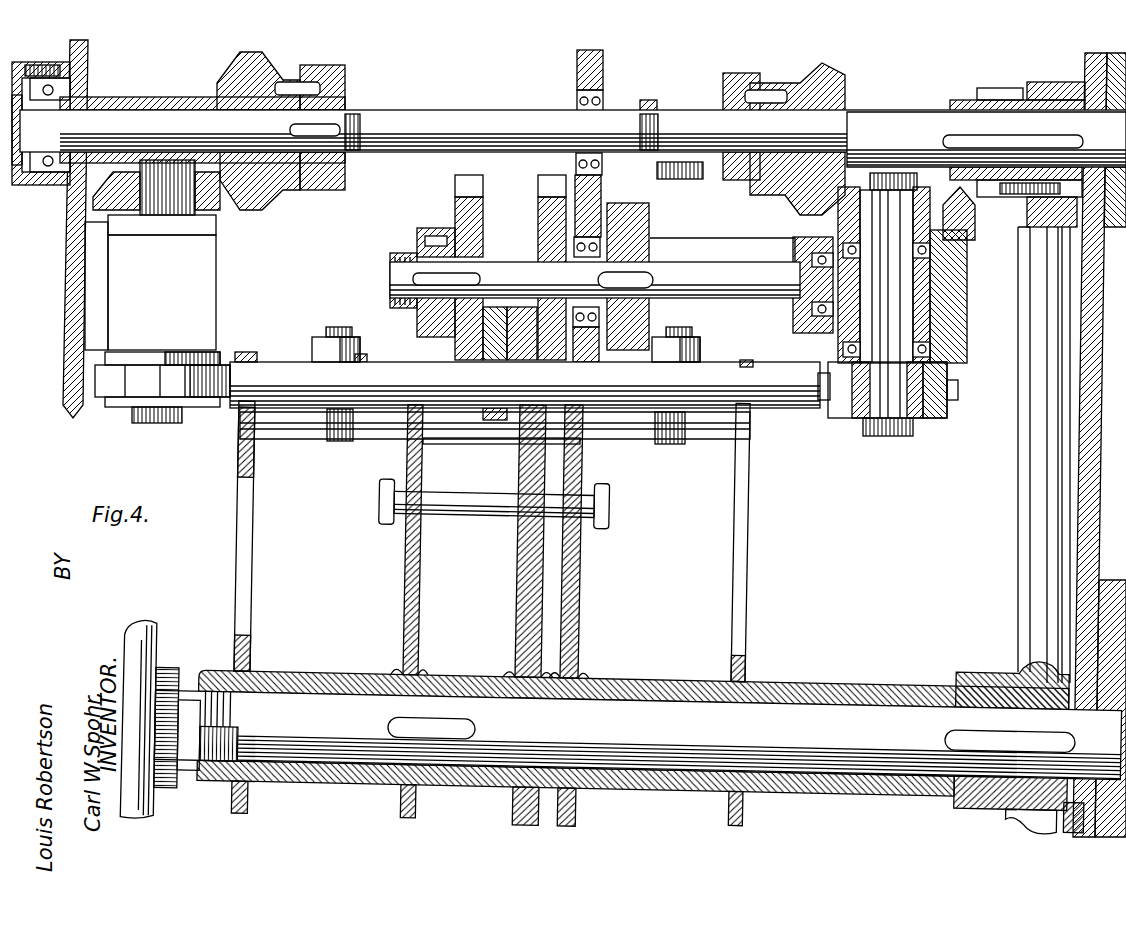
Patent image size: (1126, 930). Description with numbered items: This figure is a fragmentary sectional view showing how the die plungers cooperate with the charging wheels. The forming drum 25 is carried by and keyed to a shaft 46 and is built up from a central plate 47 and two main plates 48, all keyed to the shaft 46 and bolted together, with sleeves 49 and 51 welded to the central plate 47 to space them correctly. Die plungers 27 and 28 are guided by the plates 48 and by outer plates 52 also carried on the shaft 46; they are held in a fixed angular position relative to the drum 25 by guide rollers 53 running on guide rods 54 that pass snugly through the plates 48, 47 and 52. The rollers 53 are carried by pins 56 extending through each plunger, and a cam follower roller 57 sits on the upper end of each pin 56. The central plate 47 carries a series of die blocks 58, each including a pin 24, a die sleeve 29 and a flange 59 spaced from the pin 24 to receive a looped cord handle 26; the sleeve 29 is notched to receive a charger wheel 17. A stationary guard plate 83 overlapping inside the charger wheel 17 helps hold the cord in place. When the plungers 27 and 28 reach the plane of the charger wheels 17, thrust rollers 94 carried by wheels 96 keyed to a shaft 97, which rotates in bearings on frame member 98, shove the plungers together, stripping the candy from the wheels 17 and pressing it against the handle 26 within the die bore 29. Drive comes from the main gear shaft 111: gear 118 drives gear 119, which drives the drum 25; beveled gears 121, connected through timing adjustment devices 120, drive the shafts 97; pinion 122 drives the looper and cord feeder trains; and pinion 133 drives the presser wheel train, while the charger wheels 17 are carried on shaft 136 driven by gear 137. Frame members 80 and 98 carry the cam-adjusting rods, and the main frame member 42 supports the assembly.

The main gear shaft 111 is at (460, 122).
The beveled gears 121 is at (262, 70).
The timing adjustment devices 120 is at (345, 79).
The main frame member 42 is at (603, 68).
The pinion 122 is at (989, 88).
The gear 118 is at (1045, 92).
The shaft 97 is at (139, 220).
The frame member 98 is at (958, 316).
The thrust rollers 94 is at (105, 400).
The roller cluster wheels 96 is at (203, 420).
The frame member 80 is at (62, 381).
The charger wheels 17 is at (538, 205).
The pins 24 is at (499, 302).
The pinion 133 is at (677, 179).
The gear 137 is at (649, 233).
The shaft 136 is at (740, 262).
The pins 56 is at (341, 326).
The cam follower roller 57 is at (318, 341).
The die plunger 27 is at (385, 364).
The flange 59 is at (417, 318).
The stationary guard plate 83 is at (455, 348).
The looped handles 26 is at (471, 372).
The die block 58 is at (500, 400).
The die sleeve 29 is at (515, 400).
The die plunger 28 is at (790, 408).
The guide rollers 53 is at (325, 438).
The guide rods 54 is at (370, 438).
The sleeve 51 is at (432, 439).
The outer plates 52 is at (254, 540).
The main plates 48 is at (422, 557).
The central plate 47 is at (519, 581).
The sleeve 49 is at (458, 666).
The shaft 46 is at (655, 692).
The forming drum 25 is at (752, 600).
The gear 119 is at (1018, 549).